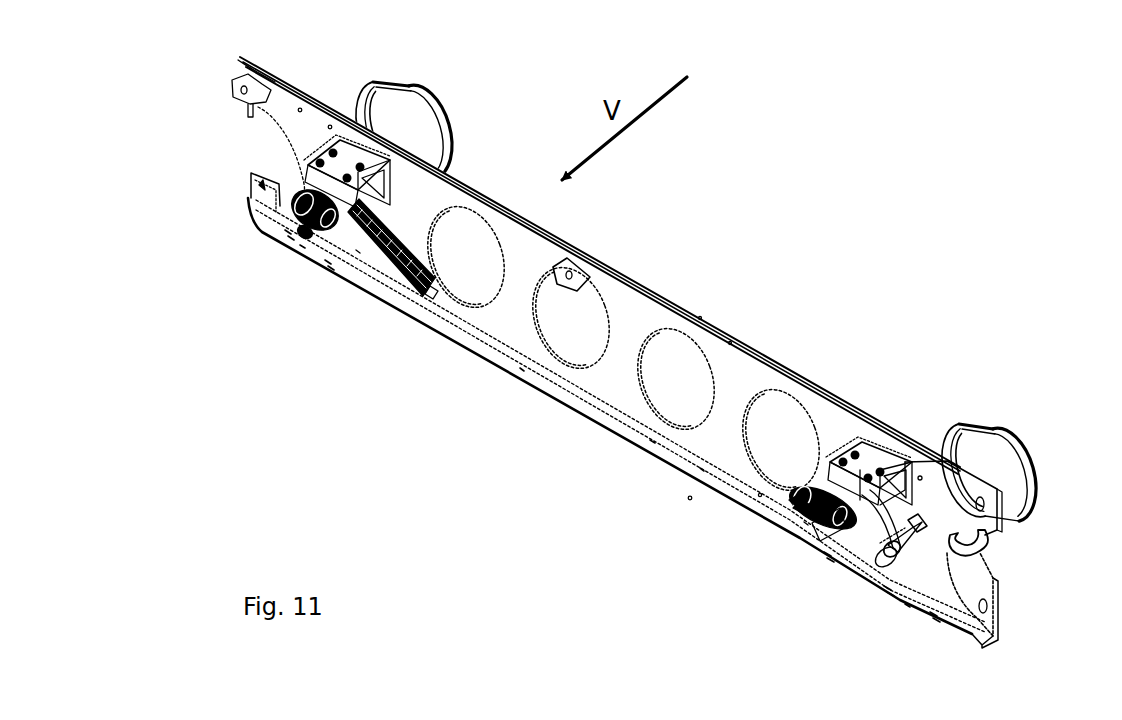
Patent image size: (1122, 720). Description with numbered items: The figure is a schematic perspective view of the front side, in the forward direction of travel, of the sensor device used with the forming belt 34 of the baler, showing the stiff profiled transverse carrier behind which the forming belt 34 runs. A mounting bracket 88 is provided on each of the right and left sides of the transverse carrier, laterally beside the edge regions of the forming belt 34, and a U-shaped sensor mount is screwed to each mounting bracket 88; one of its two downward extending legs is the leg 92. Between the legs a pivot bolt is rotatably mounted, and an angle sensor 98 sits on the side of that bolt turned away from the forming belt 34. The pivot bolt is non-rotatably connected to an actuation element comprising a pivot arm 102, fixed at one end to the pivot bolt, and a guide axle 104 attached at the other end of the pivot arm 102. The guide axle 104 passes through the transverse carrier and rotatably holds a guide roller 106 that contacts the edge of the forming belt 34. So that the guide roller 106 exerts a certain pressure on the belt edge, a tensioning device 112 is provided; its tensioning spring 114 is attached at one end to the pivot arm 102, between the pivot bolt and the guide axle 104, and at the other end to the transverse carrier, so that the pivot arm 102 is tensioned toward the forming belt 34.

The forming belt 34 is at (538, 328).
The mounting bracket 88 is at (348, 160).
The leg 92 is at (310, 190).
The angle sensor 98 is at (315, 195).
The pivot arm 102 is at (878, 532).
The guide axle 104 is at (923, 516).
The guide roller 106 is at (430, 133).
The tensioning device 112 is at (361, 246).
The tensioning spring 114 is at (383, 256).